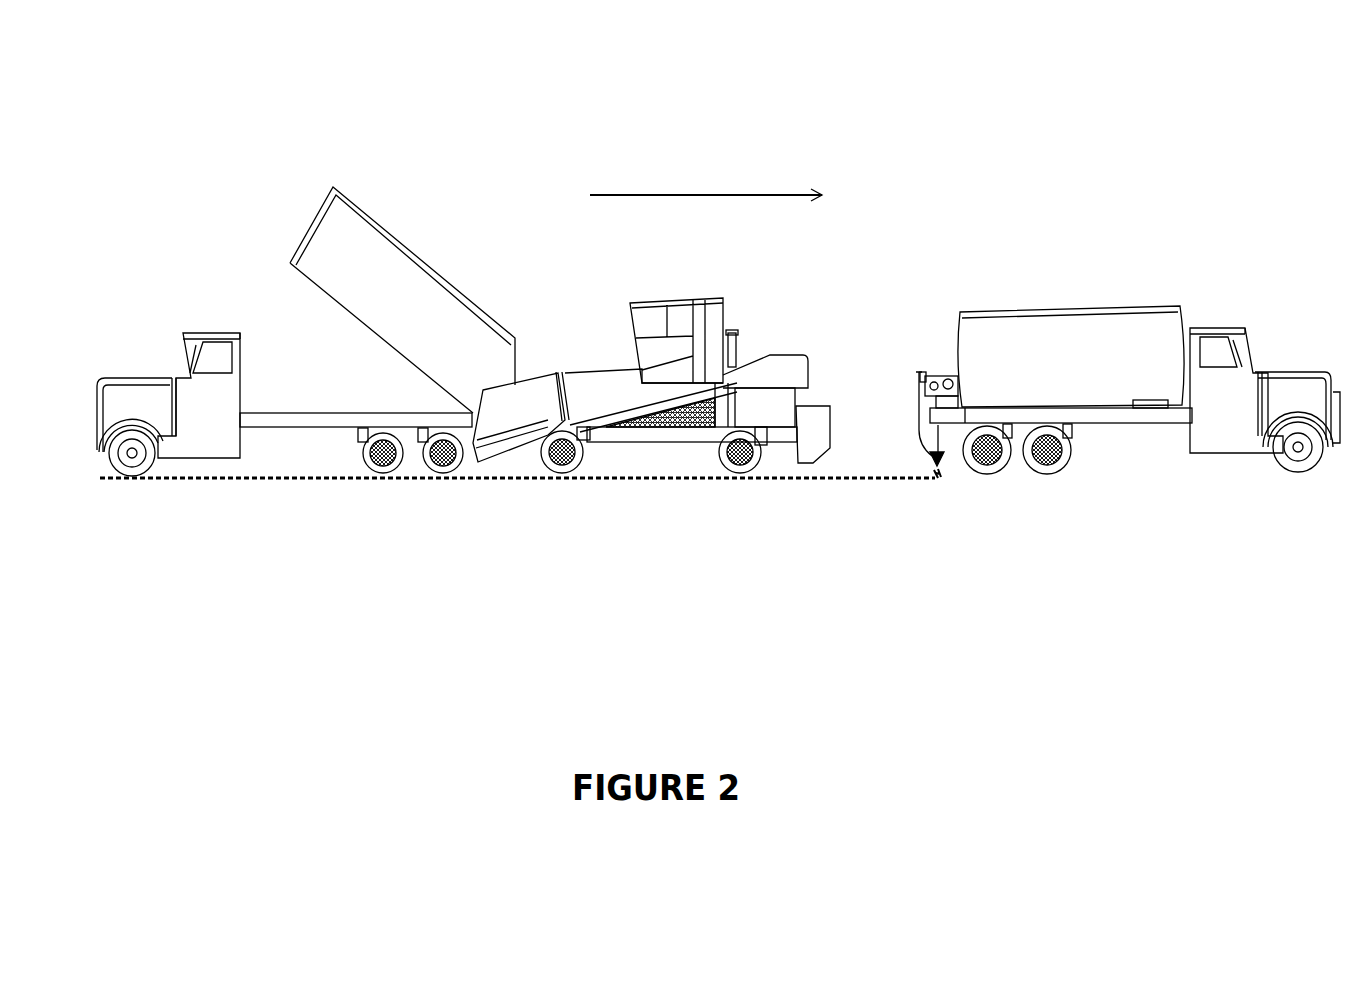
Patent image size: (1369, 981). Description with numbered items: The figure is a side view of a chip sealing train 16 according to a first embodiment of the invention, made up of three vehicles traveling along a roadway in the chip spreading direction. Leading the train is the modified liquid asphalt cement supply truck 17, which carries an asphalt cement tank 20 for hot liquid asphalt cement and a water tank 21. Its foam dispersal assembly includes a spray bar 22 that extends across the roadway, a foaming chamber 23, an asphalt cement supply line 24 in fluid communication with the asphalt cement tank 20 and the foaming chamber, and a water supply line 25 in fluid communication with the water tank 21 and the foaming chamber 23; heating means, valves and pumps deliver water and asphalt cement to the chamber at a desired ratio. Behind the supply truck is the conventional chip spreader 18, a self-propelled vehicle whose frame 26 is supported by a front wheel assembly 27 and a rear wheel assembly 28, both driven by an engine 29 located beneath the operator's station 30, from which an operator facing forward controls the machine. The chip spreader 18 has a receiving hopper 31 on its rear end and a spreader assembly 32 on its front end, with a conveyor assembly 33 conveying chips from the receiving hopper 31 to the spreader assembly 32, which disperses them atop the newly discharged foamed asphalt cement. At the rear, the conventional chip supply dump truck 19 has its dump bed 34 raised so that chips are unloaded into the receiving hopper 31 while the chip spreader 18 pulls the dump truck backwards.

The chip sealing train 16 is at (893, 97).
The modified liquid asphalt cement supply truck 17 is at (1102, 375).
The chip spreader 18 is at (676, 391).
The chip supply dump truck 19 is at (306, 331).
The asphalt cement tank 20 is at (1128, 322).
The water tank 21 is at (957, 402).
The spray bar 22 is at (942, 470).
The foaming chamber 23 is at (922, 459).
The asphalt cement supply line 24 is at (915, 432).
The water supply line 25 is at (992, 455).
The frame 26 is at (667, 433).
The front wheel assembly 27 is at (742, 484).
The rear wheel assembly 28 is at (562, 484).
The engine 29 is at (697, 428).
The operator's station 30 is at (731, 318).
The receiving hopper 31 is at (540, 370).
The spreader assembly 32 is at (813, 398).
The conveyor assembly 33 is at (617, 420).
The dump bed 34 is at (394, 360).